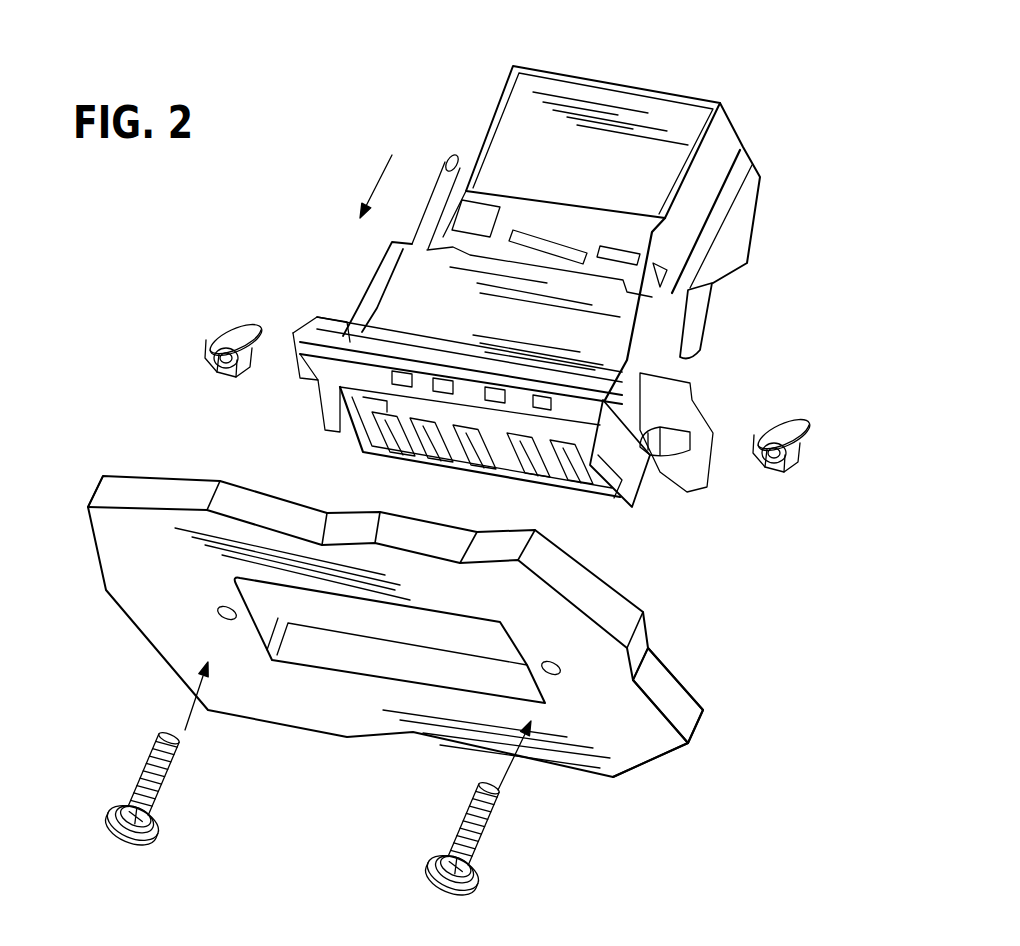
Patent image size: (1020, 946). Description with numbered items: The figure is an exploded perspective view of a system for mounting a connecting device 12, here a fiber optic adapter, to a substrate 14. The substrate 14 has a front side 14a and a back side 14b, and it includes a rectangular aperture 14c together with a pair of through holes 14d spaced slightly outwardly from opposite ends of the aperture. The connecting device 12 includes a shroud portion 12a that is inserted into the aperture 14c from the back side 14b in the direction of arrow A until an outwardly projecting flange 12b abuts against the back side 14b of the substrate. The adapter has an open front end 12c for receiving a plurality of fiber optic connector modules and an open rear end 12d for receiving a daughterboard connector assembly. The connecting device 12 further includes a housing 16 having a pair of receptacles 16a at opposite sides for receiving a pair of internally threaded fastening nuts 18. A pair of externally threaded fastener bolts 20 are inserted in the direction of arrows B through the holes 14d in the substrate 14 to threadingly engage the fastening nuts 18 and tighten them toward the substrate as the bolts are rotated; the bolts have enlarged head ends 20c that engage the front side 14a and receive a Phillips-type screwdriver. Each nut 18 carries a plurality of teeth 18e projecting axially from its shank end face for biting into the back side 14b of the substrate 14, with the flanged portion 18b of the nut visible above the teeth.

The connecting device 12 is at (760, 224).
The shroud portion 12a is at (645, 483).
The outwardly projecting flange 12b is at (690, 370).
The open front end 12c is at (428, 458).
The open rear end 12d is at (583, 76).
The substrate 14 is at (687, 715).
The front side 14a is at (623, 748).
The back side 14b is at (682, 680).
The rectangular aperture 14c is at (293, 663).
The through holes 14d is at (222, 617).
The housing 16 is at (640, 312).
The receptacles 16a is at (320, 393).
The fastening nuts 18 is at (192, 336).
The nut flange 18b is at (250, 320).
The teeth 18e is at (228, 378).
The fastener bolts 20 is at (167, 777).
The enlarged head ends 20c is at (138, 843).
The arrow A is at (378, 183).
The arrows B is at (187, 708).